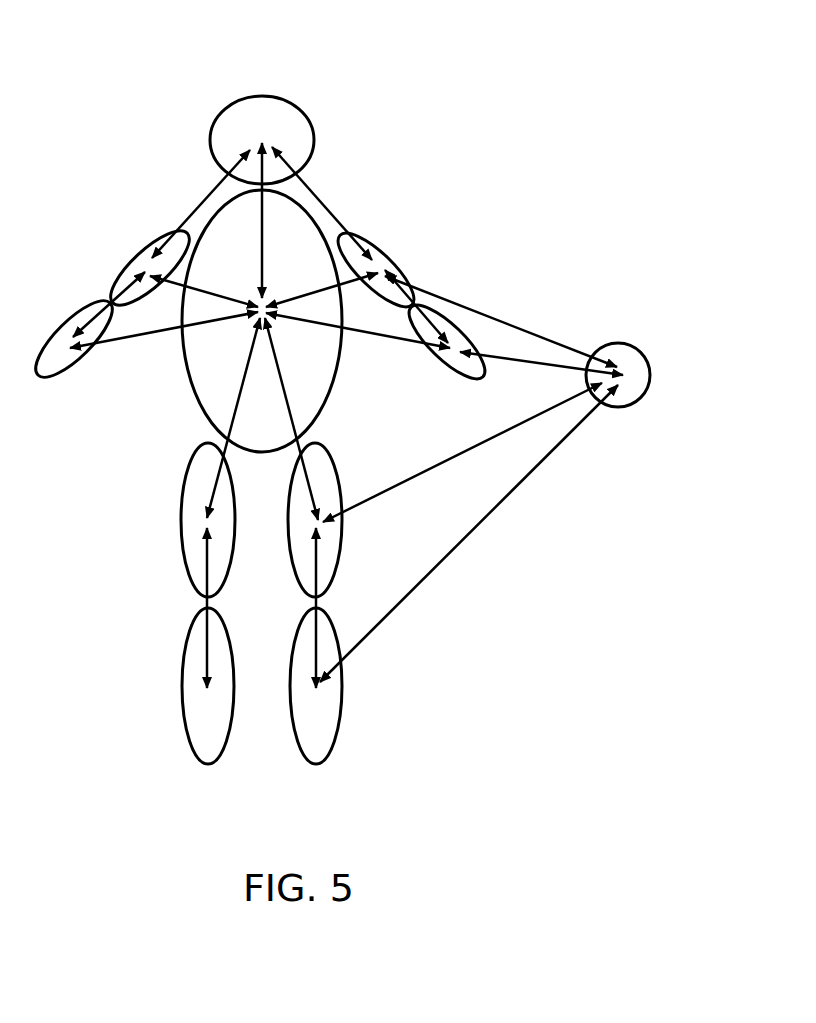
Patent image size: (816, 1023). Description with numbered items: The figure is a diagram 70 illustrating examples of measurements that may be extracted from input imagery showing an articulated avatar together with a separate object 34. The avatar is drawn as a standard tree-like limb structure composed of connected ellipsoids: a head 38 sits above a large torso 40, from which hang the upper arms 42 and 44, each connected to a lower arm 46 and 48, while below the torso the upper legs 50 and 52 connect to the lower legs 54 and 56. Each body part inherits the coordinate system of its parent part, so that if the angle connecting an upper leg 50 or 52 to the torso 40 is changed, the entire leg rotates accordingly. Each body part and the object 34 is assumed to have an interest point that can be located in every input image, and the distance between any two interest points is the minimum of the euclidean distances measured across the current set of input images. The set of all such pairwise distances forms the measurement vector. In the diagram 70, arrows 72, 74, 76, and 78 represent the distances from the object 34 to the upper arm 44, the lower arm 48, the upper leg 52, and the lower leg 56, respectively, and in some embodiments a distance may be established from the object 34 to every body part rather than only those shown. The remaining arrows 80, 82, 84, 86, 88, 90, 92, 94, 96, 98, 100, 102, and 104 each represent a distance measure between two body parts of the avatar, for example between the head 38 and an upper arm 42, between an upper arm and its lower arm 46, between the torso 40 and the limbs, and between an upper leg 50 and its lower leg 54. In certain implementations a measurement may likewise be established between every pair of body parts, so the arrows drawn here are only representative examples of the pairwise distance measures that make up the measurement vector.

The object 34 is at (618, 342).
The head 38 is at (310, 118).
The torso 40 is at (343, 220).
The upper arm 42 is at (130, 250).
The upper arm 44 is at (392, 247).
The lower arm 46 is at (62, 320).
The lower arm 48 is at (478, 340).
The upper leg 50 is at (182, 560).
The upper leg 52 is at (341, 562).
The lower leg 54 is at (185, 640).
The lower leg 56 is at (345, 700).
The diagram 70 is at (268, 73).
The arrow 72 is at (490, 308).
The arrow 74 is at (495, 372).
The arrow 76 is at (412, 474).
The arrow 78 is at (440, 553).
The arrow 80 is at (193, 212).
The arrow 82 is at (100, 284).
The arrow 84 is at (120, 338).
The arrow 86 is at (210, 292).
The arrow 88 is at (268, 265).
The arrow 90 is at (305, 173).
The arrow 92 is at (405, 306).
The arrow 94 is at (292, 300).
The arrow 96 is at (358, 335).
The arrow 98 is at (270, 405).
The arrow 100 is at (305, 365).
The arrow 102 is at (210, 600).
The arrow 104 is at (320, 600).